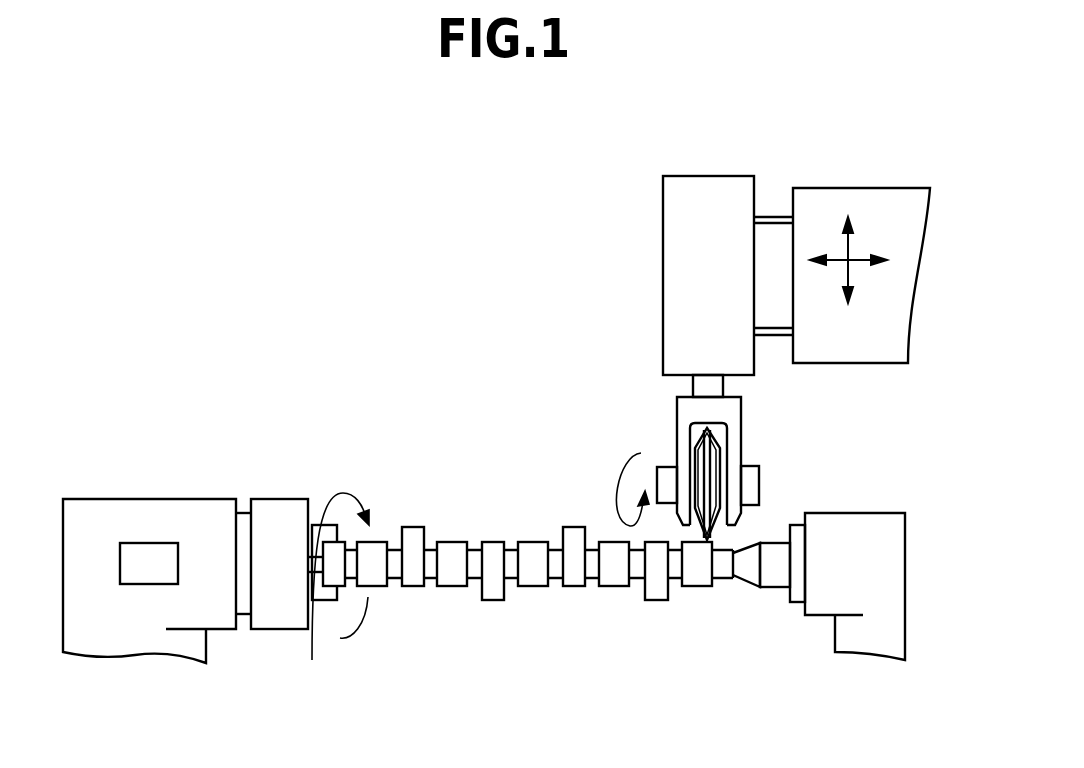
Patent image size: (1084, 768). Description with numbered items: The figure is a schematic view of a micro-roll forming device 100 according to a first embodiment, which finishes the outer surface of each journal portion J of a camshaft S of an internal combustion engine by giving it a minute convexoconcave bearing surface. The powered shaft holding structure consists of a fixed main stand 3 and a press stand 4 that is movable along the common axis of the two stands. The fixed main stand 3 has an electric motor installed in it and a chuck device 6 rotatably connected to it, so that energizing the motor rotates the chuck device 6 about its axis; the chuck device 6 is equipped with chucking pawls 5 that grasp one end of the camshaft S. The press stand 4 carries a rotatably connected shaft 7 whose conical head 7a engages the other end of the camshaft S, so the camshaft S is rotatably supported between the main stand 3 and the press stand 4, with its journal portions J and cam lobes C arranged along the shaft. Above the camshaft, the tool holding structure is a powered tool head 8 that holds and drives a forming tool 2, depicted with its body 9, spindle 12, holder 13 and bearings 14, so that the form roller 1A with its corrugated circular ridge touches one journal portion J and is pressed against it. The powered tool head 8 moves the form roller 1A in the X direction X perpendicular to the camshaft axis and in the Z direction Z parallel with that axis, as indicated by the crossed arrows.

The micro-roll forming device 100 is at (462, 148).
The forming tool 2 is at (722, 304).
The powered tool head 8 is at (847, 245).
The wheel head body 9 is at (695, 247).
The wheel spindle 12 is at (712, 388).
The wheel holder 13 is at (738, 430).
The bearing 14 is at (745, 488).
The form roller 1A is at (705, 463).
The fixed main stand 3 is at (92, 515).
The chuck device 6 is at (278, 515).
The chucking pawls 5 is at (320, 600).
The camshaft S is at (528, 555).
The cam C is at (573, 578).
The journal portion J is at (697, 578).
The conical head 7a is at (745, 570).
The shaft 7 is at (777, 577).
The press stand 4 is at (877, 543).
The X-direction X is at (848, 279).
The Z-direction Z is at (860, 266).